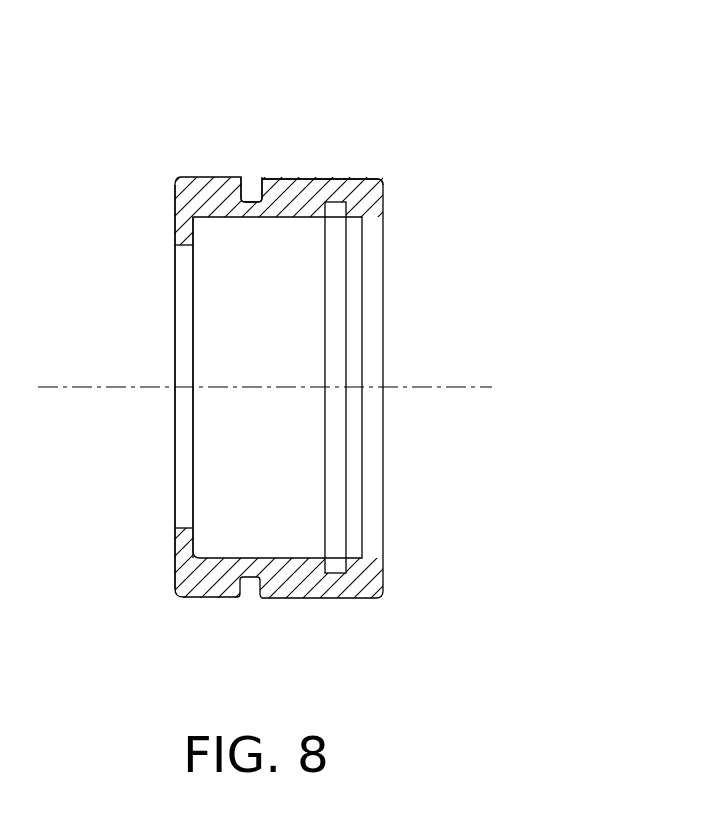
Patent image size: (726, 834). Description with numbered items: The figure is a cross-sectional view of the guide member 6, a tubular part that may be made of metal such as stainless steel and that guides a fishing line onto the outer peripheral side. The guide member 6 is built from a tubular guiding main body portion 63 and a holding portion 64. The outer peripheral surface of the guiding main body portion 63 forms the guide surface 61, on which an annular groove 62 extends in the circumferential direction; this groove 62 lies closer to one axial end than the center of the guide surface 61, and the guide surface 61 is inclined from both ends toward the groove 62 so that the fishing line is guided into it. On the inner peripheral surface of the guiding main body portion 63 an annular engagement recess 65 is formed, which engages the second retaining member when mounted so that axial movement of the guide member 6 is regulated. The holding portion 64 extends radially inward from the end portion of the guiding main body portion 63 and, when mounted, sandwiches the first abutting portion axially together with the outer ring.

The guide member 6 is at (400, 133).
The guide surface 61 is at (296, 180).
The groove 62 is at (252, 180).
The guiding main body portion 63 is at (343, 172).
The holding portion 64 is at (175, 237).
The engagement recess 65 is at (335, 205).